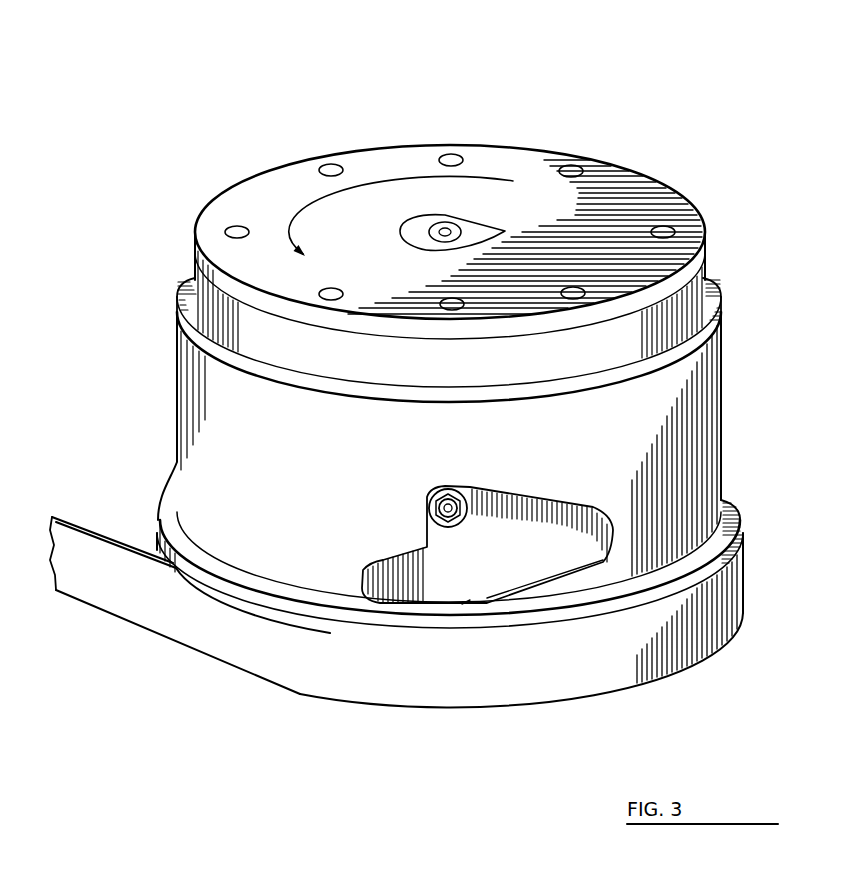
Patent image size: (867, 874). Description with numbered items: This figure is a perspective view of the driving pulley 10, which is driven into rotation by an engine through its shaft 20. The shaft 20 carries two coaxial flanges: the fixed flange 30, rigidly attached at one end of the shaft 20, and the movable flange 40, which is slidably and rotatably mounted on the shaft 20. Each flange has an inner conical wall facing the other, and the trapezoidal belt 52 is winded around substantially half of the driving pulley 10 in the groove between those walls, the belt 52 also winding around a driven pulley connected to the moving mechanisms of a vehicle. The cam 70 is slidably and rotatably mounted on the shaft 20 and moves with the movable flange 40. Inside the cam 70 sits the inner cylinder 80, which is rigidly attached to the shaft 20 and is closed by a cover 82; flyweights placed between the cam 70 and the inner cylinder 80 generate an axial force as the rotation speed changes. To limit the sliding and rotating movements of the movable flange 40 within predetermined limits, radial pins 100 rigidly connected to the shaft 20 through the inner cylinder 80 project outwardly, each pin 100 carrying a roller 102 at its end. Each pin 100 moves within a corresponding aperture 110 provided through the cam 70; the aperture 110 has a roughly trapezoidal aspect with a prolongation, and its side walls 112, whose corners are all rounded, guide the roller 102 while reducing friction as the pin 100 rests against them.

The driving pulley 10 is at (232, 118).
The shaft 20 is at (457, 228).
The fixed flange 30 is at (730, 638).
The movable flange 40 is at (730, 508).
The trapezoidal belt 52 is at (107, 618).
The cam 70 is at (722, 380).
The inner cylinder 80 is at (701, 277).
The cover 82 is at (532, 176).
The radial pin 100 is at (448, 489).
The roller 102 is at (488, 493).
The aperture 110 is at (487, 549).
The side walls 112 is at (455, 603).